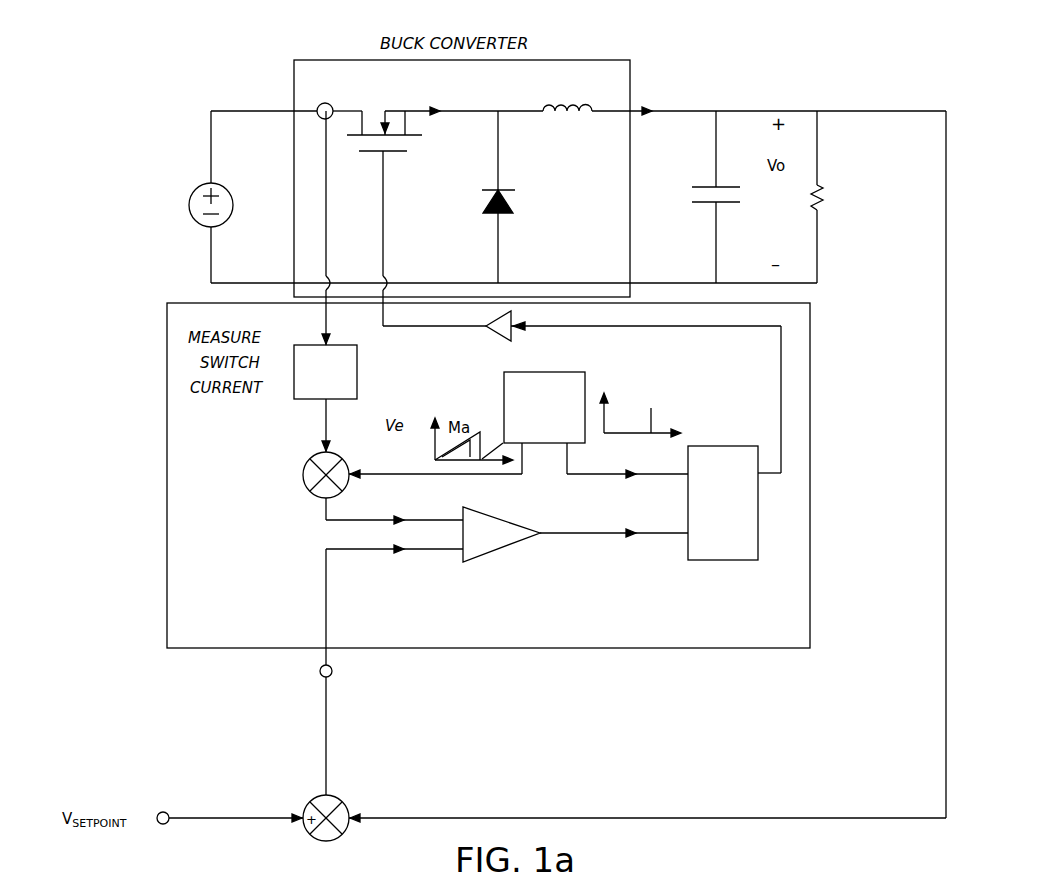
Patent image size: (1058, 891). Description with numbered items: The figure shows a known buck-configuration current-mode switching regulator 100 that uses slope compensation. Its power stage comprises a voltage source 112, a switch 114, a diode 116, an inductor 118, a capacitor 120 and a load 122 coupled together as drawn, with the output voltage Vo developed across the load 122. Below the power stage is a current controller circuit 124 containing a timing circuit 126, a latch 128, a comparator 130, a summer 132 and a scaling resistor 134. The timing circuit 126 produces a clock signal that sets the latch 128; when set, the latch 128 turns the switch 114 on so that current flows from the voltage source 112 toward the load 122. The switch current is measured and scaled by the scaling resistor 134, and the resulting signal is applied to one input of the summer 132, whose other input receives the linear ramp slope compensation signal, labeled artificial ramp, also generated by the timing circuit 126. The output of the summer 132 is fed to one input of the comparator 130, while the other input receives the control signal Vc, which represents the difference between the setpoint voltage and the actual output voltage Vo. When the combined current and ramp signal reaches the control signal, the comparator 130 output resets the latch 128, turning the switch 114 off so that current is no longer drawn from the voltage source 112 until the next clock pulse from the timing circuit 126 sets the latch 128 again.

The switching regulator 100 is at (790, 72).
The voltage source 112 is at (186, 201).
The switch 114 is at (373, 105).
The diode 116 is at (486, 200).
The inductor 118 is at (583, 96).
The capacitor 120 is at (707, 205).
The load 122 is at (823, 190).
The current controller circuit 124 is at (811, 382).
The timing circuit 126 is at (585, 372).
The latch 128 is at (723, 562).
The comparator 130 is at (528, 540).
The summer 132 is at (303, 475).
The scaling resistor 134 is at (358, 373).